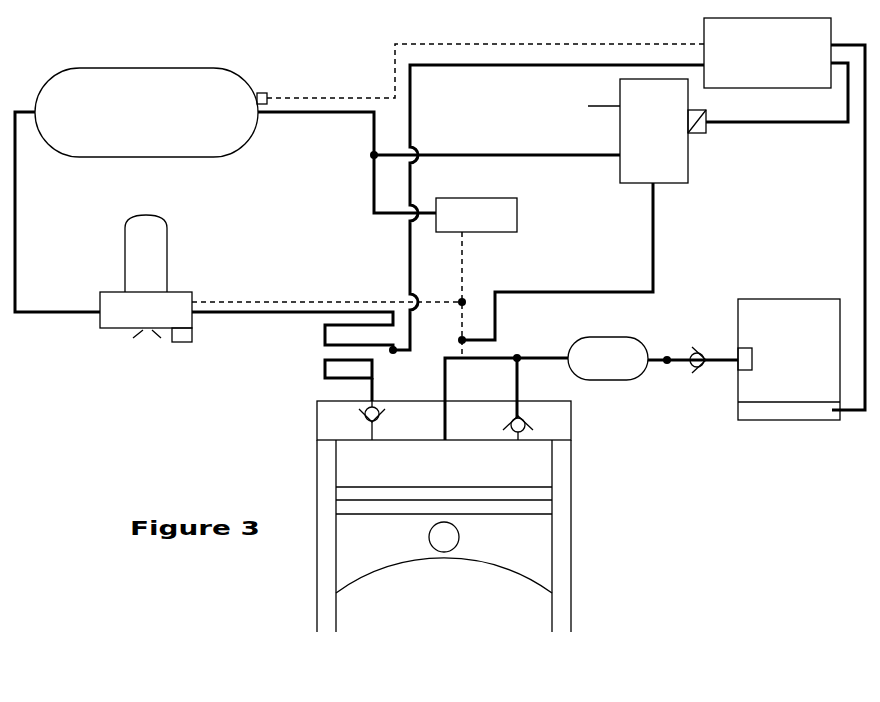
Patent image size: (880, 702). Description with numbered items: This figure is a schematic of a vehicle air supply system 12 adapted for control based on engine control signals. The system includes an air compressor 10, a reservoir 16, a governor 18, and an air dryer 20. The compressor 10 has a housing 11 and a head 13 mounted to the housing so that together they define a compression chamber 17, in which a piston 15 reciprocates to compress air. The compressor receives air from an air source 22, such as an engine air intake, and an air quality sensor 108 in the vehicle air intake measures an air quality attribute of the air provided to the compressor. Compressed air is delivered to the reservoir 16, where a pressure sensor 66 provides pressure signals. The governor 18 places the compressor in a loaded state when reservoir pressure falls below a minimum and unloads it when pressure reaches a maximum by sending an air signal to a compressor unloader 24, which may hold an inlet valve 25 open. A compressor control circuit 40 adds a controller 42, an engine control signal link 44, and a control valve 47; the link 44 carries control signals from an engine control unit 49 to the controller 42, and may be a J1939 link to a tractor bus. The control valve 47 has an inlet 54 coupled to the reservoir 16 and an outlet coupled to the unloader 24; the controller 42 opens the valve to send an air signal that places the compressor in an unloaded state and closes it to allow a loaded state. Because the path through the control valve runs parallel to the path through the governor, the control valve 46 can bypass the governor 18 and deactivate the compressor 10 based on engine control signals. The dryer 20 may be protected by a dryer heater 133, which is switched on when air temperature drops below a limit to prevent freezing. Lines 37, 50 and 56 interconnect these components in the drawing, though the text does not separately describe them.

The air compressor 10 is at (477, 493).
The housing 11 is at (562, 616).
The air supply system 12 is at (265, 52).
The head 13 is at (571, 416).
The piston 15 is at (520, 545).
The reservoir 16 is at (133, 68).
The compression chamber 17 is at (363, 470).
The governor 18 is at (495, 214).
The air dryer 20 is at (116, 334).
The air source 22 is at (738, 355).
The compressor unloader 24 is at (468, 392).
The inlet valve 25 is at (532, 418).
The conduit 37 is at (59, 318).
The compressor control circuit 40 is at (518, 26).
The controller 42 is at (723, 18).
The engine control signal link 44 is at (397, 354).
The control valve 46 is at (318, 372).
The control valve 47 is at (663, 155).
The engine control unit 49 is at (805, 412).
The discharge conduit 50 is at (305, 318).
The inlet 54 is at (490, 155).
The delivery conduit 56 is at (657, 246).
The pressure sensor 66 is at (268, 94).
The air quality sensor 108 is at (667, 368).
The dryer heater 133 is at (183, 342).